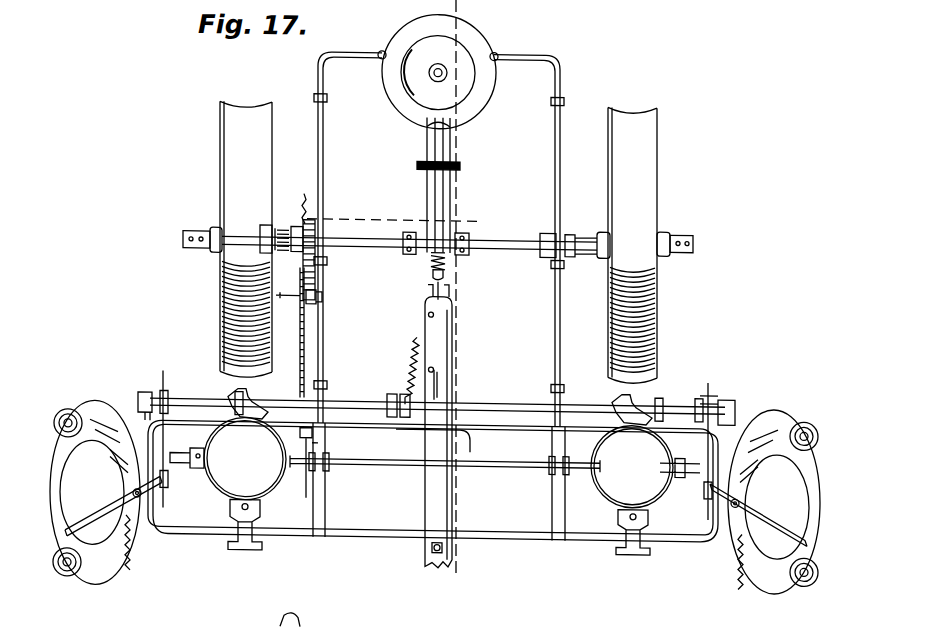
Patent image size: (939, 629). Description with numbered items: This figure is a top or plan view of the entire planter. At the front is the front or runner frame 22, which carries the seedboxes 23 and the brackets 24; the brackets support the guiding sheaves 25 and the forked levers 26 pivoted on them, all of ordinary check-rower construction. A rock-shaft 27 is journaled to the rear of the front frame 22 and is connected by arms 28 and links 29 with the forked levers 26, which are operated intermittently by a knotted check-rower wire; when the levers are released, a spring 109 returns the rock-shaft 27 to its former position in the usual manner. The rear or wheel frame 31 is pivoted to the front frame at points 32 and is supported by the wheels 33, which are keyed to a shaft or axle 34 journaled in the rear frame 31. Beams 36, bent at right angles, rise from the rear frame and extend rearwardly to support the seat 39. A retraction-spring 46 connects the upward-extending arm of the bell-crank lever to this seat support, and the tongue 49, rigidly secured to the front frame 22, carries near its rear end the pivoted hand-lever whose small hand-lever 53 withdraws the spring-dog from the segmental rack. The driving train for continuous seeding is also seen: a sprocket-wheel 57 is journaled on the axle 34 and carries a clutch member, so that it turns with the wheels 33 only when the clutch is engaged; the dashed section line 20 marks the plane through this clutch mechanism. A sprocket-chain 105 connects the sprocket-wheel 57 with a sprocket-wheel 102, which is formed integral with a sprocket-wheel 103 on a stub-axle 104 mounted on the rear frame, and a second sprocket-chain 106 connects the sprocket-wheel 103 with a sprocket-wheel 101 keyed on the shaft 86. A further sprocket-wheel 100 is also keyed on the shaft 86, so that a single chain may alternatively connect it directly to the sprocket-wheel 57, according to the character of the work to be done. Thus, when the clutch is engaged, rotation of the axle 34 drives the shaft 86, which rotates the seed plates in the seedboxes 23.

The section line 20 is at (298, 230).
The front or runner frame 22 is at (385, 536).
The seedboxes 23 is at (438, 462).
The brackets 24 is at (58, 486).
The sheaves 25 is at (434, 503).
The forked levers 26 is at (790, 512).
The rock-shaft 27 is at (190, 403).
The arms 28 is at (722, 395).
The links 29 is at (140, 405).
The rear or wheel frame 31 is at (546, 54).
The pivot points 32 is at (327, 470).
The wheels 33 is at (438, 242).
The shaft or axle 34 is at (524, 238).
The beams 36 is at (435, 188).
The seat 39 is at (406, 38).
The retraction-spring 46 is at (446, 268).
The tongue 49 is at (433, 498).
The hand-lever 53 is at (283, 620).
The sprocket-wheel 57 is at (304, 196).
The shaft 86 is at (492, 468).
The sprocket-wheel 100 is at (312, 486).
The sprocket-wheel 101 is at (292, 487).
The sprocket-wheel 102 is at (316, 302).
The sprocket-wheel 103 is at (303, 282).
The stub-axle 104 is at (300, 327).
The sprocket-chain 105 is at (327, 263).
The sprocket-chain 106 is at (300, 386).
The spring 109 is at (411, 366).